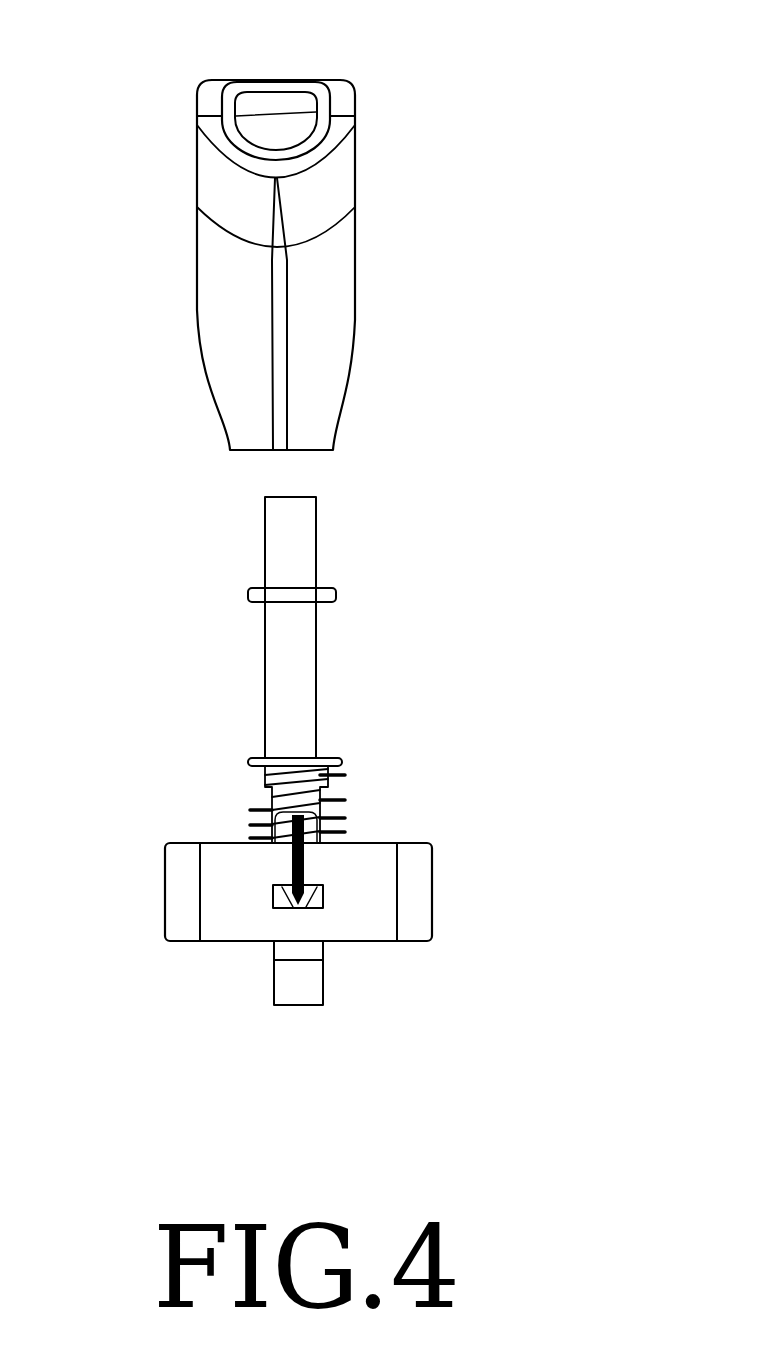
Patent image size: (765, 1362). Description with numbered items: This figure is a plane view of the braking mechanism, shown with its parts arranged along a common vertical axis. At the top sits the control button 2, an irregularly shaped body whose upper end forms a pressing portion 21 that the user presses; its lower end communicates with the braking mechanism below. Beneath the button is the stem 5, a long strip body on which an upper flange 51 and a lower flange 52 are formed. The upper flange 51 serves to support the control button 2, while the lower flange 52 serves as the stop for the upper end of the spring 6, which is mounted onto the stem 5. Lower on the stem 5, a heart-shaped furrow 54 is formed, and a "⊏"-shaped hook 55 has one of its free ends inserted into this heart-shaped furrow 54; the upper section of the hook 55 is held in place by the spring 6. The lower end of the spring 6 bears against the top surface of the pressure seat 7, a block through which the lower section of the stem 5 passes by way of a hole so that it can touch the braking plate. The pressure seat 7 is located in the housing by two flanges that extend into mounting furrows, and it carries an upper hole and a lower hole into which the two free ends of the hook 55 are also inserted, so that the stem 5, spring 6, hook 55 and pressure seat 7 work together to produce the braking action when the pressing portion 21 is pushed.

The control button 2 is at (330, 265).
The pressing portion 21 is at (253, 128).
The stem 5 is at (295, 528).
The upper flange 51 is at (333, 585).
The lower flange 52 is at (330, 752).
The spring 6 is at (263, 787).
The hook 55 is at (330, 855).
The pressure seat 7 is at (213, 847).
The heart-shaped furrow 54 is at (313, 908).